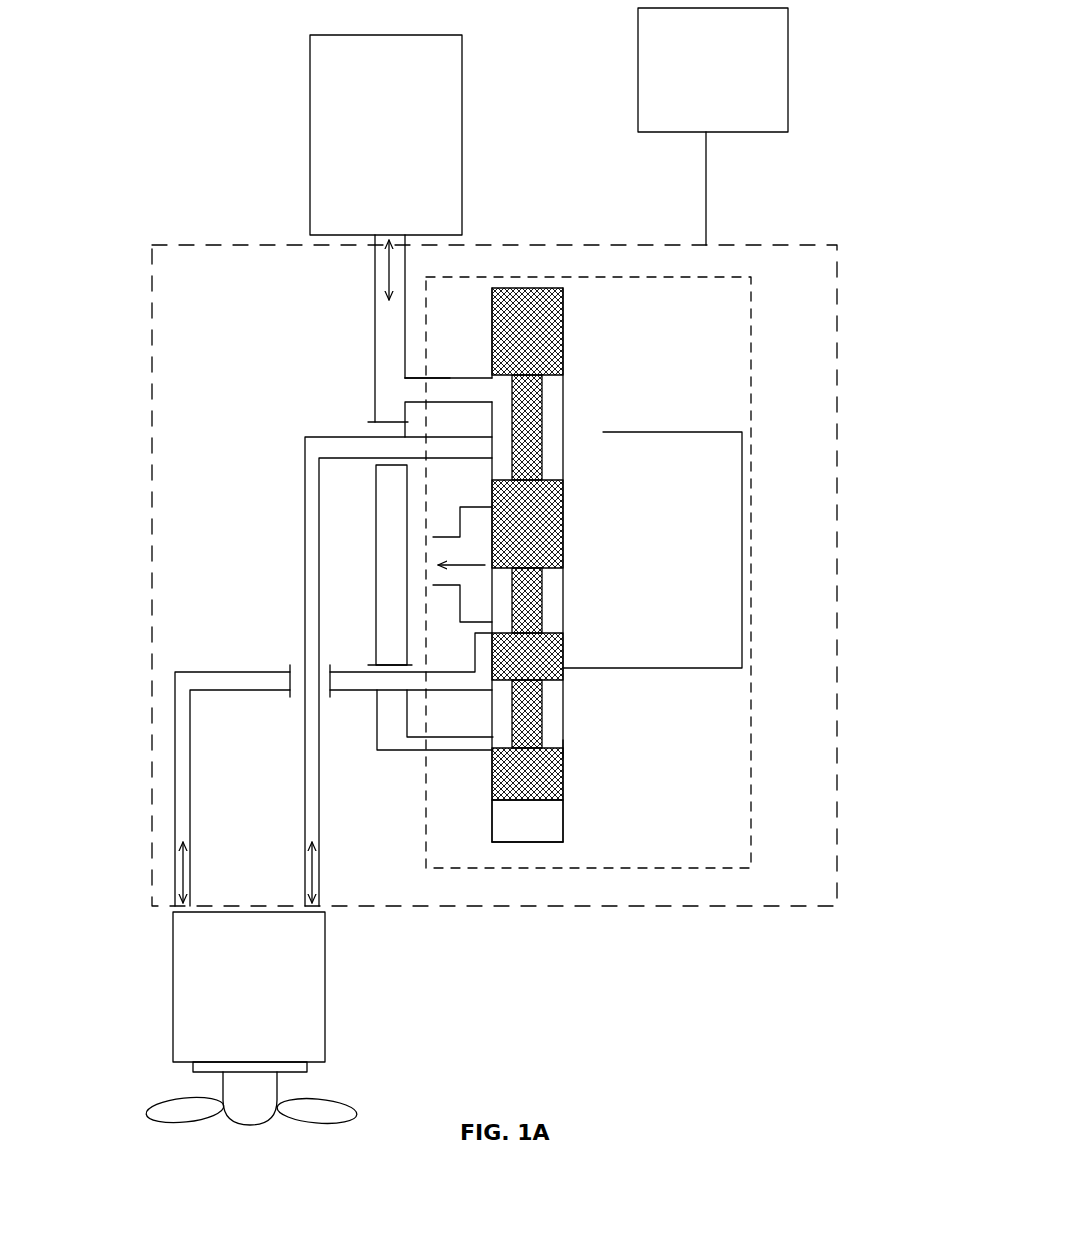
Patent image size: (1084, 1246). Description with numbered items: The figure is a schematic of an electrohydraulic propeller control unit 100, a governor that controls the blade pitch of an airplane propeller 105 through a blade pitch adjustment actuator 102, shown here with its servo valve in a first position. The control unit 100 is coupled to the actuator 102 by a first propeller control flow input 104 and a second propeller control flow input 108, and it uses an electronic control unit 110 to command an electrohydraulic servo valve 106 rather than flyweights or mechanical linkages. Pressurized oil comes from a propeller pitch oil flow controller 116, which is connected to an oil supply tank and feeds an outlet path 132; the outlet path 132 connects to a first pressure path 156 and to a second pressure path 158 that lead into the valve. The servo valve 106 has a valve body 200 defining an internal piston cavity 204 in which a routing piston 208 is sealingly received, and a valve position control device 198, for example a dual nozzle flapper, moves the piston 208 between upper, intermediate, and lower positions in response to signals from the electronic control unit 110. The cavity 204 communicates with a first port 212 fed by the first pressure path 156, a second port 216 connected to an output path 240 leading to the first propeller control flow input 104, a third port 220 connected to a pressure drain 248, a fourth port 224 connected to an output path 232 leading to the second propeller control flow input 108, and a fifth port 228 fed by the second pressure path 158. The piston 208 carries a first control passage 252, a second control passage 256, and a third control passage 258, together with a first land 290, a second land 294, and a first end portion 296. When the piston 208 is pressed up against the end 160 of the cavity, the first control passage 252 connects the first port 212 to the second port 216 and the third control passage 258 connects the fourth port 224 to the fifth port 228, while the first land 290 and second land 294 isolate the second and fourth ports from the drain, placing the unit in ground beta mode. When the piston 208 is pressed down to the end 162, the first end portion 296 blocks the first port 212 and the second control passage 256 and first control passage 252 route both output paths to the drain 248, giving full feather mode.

The propeller control unit 100 is at (841, 793).
The blade pitch adjustment actuator 102 is at (313, 1015).
The first propeller control flow input 104 is at (313, 793).
The airplane propeller 105 is at (146, 1114).
The electrohydraulic servo valve 106 is at (755, 316).
The second propeller control flow input 108 is at (183, 768).
The electronic control unit 110 is at (713, 126).
The propeller pitch oil flow controller 116 is at (455, 157).
The outlet path 132 is at (382, 265).
The first pressure path 156 is at (440, 387).
The second pressure path 158 is at (398, 745).
The end of the cavity 160 is at (530, 288).
The end of the cavity 162 is at (527, 843).
The valve position control device 198 is at (733, 605).
The valve body 200 is at (566, 749).
The internal piston cavity 204 is at (567, 767).
The routing piston 208 is at (537, 790).
The first port 212 is at (475, 387).
The second port 216 is at (490, 450).
The third port 220 is at (483, 607).
The fourth port 224 is at (470, 682).
The fifth port 228 is at (480, 743).
The output path 232 is at (222, 675).
The output path 240 is at (305, 465).
The pressure drain 248 is at (443, 547).
The first control passage 252 is at (502, 415).
The second control passage 256 is at (500, 620).
The third control passage 258 is at (503, 733).
The first land 290 is at (548, 522).
The second land 294 is at (515, 665).
The first end portion 296 is at (555, 338).